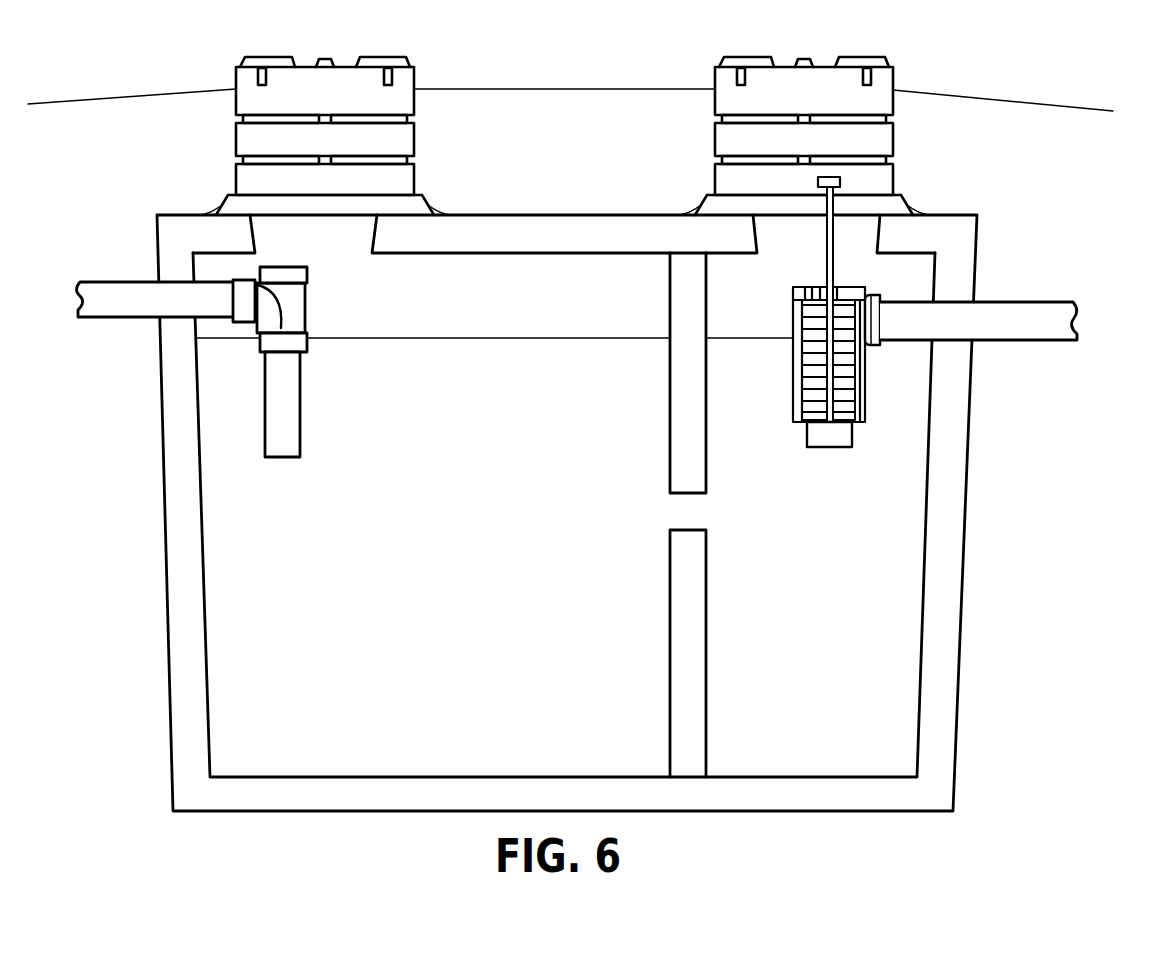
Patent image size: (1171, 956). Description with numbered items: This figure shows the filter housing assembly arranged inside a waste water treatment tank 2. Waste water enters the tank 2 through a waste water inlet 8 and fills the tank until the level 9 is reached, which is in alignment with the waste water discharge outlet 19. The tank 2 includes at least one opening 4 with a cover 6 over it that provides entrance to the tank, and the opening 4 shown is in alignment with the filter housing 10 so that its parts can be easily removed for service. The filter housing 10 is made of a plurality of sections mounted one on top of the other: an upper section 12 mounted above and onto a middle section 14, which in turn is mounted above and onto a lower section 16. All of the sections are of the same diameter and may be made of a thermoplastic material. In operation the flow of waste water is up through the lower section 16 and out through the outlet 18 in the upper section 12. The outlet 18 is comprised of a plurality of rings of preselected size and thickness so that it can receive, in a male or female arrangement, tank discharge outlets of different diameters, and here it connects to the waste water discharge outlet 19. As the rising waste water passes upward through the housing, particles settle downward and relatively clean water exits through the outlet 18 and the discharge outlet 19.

The waste water treatment tank 2 is at (998, 500).
The opening 4 is at (798, 254).
The cover 6 is at (734, 60).
The waste water inlet 8 is at (117, 283).
The level 9 is at (253, 332).
The filter housing 10 is at (781, 358).
The upper section 12 is at (781, 318).
The middle section 14 is at (781, 378).
The lower section 16 is at (803, 426).
The outlet 18 is at (877, 296).
The waste water discharge outlet 19 is at (1008, 308).